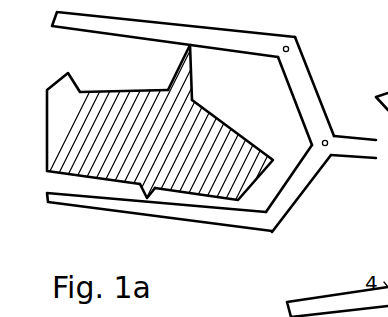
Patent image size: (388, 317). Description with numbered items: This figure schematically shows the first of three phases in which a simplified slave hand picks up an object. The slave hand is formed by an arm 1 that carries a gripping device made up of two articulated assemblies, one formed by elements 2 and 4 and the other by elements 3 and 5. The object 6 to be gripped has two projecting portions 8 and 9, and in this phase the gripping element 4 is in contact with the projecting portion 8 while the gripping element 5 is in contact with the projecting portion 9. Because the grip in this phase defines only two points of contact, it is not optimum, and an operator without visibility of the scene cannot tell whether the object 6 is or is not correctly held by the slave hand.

The arm 1 is at (354, 147).
The articulated assembly element 2 is at (314, 100).
The articulated assembly element 3 is at (306, 173).
The gripping element 4 is at (256, 42).
The gripping element 5 is at (228, 218).
The object 6 is at (77, 110).
The projecting portion 8 is at (193, 77).
The projecting portion 9 is at (143, 186).